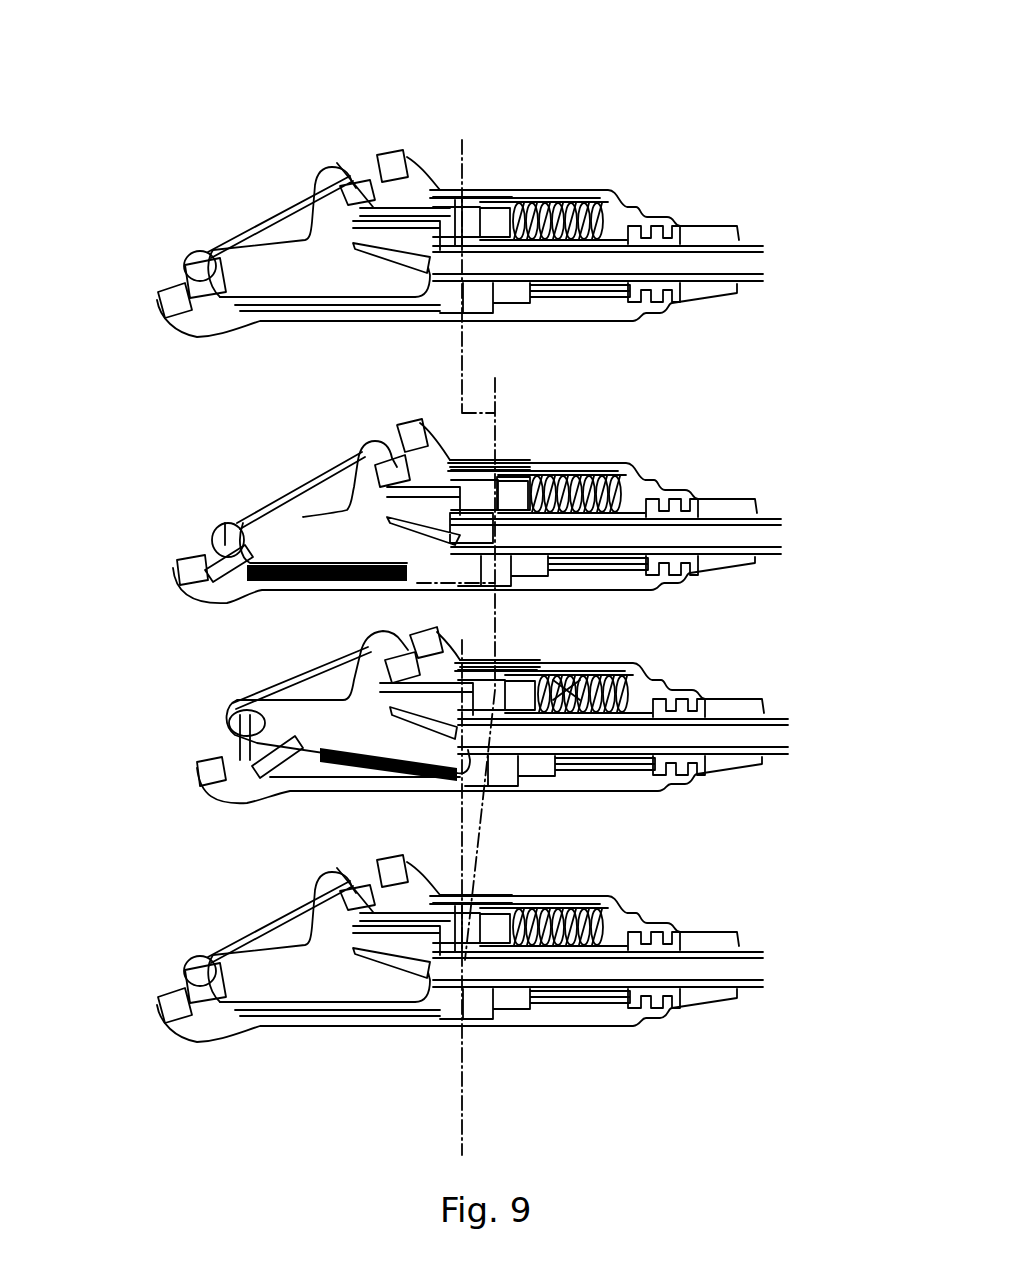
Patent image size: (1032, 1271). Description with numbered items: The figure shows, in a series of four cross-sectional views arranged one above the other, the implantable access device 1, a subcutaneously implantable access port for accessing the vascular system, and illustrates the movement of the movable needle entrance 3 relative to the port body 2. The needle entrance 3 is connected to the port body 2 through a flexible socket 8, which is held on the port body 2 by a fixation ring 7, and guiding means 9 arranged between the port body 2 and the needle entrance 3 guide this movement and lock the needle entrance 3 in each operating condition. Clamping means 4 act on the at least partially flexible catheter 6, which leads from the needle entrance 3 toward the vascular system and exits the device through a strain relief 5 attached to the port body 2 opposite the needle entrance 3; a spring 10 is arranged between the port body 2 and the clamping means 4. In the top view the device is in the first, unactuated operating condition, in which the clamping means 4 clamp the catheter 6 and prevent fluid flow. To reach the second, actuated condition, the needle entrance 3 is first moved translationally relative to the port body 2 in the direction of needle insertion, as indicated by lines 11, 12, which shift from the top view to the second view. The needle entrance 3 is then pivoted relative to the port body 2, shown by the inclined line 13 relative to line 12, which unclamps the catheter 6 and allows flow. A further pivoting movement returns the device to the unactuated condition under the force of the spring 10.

The implantable access device 1 is at (143, 290).
The port body 2 is at (455, 440).
The needle entrance 3 is at (273, 265).
The clamping means 4 is at (505, 205).
The strain relief 5 is at (735, 235).
The at least partially flexible catheter 6 is at (765, 246).
The fixation ring 7 is at (390, 160).
The flexible socket 8 is at (352, 170).
The guiding means 9 is at (583, 578).
The spring 10 is at (565, 197).
The line 11 is at (465, 170).
The line 12 is at (505, 442).
The inclined line 13 is at (572, 680).